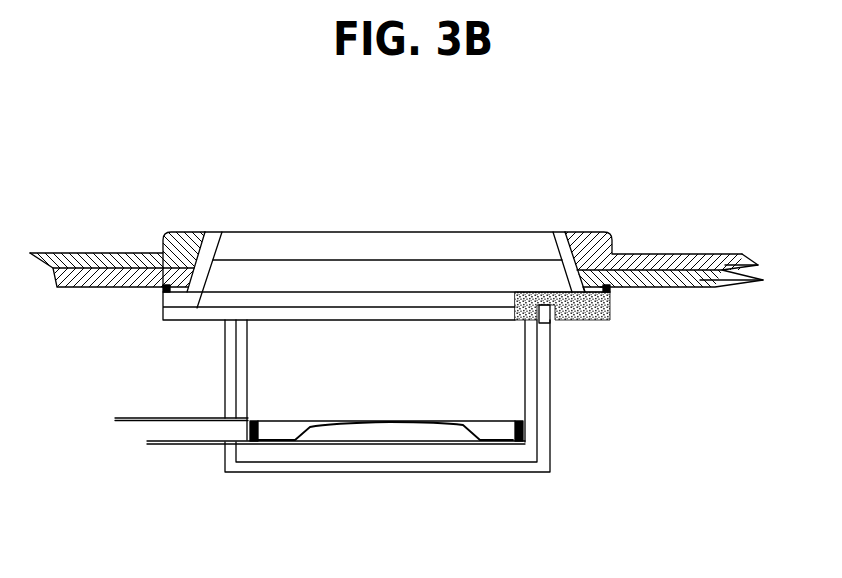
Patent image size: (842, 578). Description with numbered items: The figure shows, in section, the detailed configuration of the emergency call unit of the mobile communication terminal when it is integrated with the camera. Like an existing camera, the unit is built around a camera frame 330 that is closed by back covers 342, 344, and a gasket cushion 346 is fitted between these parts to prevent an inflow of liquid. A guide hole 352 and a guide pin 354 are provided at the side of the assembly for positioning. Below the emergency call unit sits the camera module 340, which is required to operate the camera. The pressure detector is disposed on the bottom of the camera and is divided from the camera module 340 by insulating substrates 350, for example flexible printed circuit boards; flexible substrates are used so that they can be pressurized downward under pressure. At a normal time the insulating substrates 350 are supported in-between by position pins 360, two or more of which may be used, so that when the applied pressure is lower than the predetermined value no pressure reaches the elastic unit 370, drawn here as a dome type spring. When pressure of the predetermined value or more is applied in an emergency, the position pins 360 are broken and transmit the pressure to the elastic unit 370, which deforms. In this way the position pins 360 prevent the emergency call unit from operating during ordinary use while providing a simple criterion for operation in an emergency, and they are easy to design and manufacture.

The camera frame 330 is at (565, 243).
The camera module 340 is at (258, 371).
The back cover 342 is at (683, 258).
The back cover 344 is at (697, 284).
The gasket cushion 346 is at (612, 290).
The insulating substrates 350 is at (127, 421).
The guide hole 352 is at (556, 321).
The guide pin 354 is at (546, 330).
The position pins 360 is at (524, 430).
The elastic unit 370 is at (452, 433).